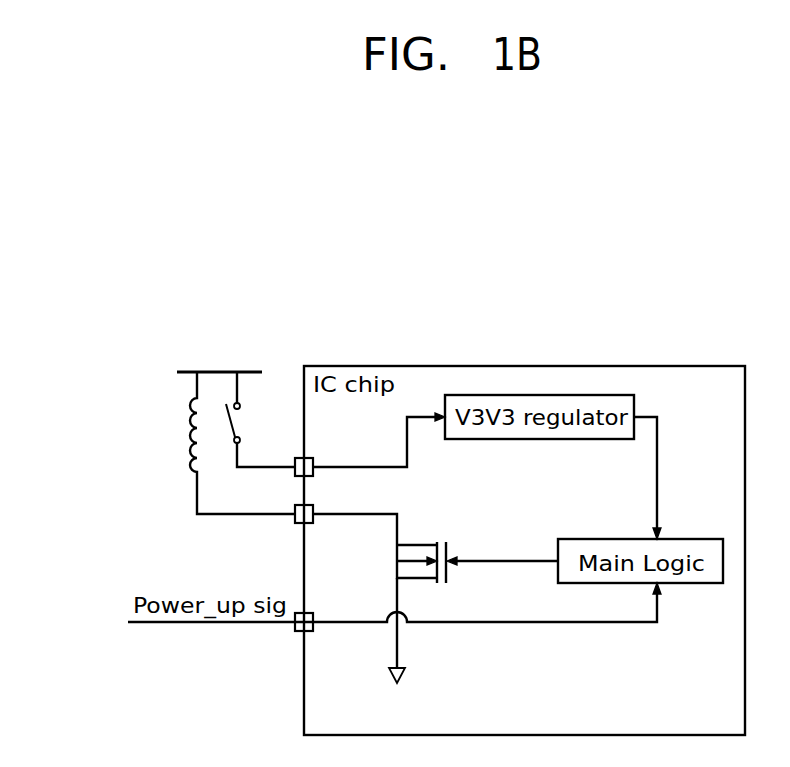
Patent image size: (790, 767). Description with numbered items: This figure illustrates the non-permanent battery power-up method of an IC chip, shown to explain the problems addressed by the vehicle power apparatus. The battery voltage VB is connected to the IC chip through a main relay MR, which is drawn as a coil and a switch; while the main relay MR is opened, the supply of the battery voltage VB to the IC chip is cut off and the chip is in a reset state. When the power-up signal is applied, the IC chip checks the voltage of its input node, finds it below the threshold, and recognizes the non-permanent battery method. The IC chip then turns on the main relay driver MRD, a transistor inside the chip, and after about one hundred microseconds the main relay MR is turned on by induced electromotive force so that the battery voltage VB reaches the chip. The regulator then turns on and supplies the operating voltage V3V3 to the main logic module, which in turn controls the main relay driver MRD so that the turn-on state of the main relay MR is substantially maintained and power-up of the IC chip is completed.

The main relay MR is at (175, 427).
The main relay driver MRD is at (430, 532).
The battery voltage VB is at (219, 358).
The operating voltage V3V3 is at (627, 478).